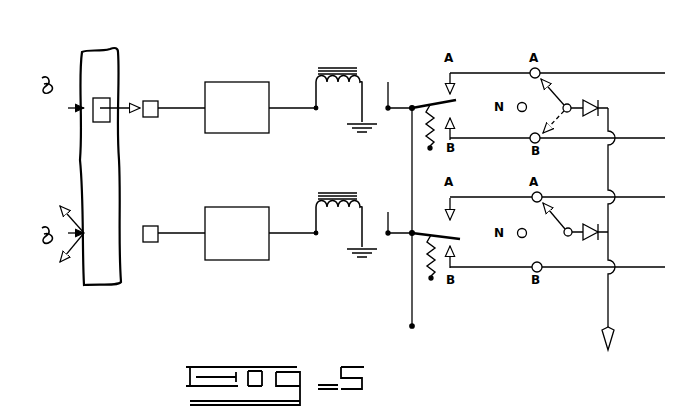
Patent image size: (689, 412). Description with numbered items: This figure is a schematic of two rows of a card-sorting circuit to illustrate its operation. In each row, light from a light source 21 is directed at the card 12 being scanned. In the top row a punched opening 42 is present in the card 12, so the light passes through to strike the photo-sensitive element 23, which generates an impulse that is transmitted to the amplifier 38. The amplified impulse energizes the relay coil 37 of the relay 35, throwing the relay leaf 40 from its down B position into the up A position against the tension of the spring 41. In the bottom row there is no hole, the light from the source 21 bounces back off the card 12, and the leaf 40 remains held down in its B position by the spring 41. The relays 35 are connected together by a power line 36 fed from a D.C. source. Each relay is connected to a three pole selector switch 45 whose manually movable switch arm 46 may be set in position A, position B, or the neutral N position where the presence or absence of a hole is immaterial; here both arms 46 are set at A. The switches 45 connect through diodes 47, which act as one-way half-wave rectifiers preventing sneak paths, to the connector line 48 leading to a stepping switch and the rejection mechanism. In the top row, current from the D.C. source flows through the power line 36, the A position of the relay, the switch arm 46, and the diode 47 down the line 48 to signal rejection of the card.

The card 12 is at (103, 72).
The light source 21 is at (44, 64).
The photo-sensitive element 23 is at (153, 101).
The relay 35 is at (372, 70).
The power line 36 is at (412, 310).
The relay coil 37 is at (338, 67).
The amplifier 38 is at (239, 96).
The relay leaf 40 is at (447, 99).
The spring 41 is at (424, 138).
The punched opening 42 is at (98, 121).
The three pole selector switch 45 is at (566, 70).
The switch arm 46 is at (567, 104).
The diode 47 is at (596, 100).
The connector line 48 is at (610, 163).